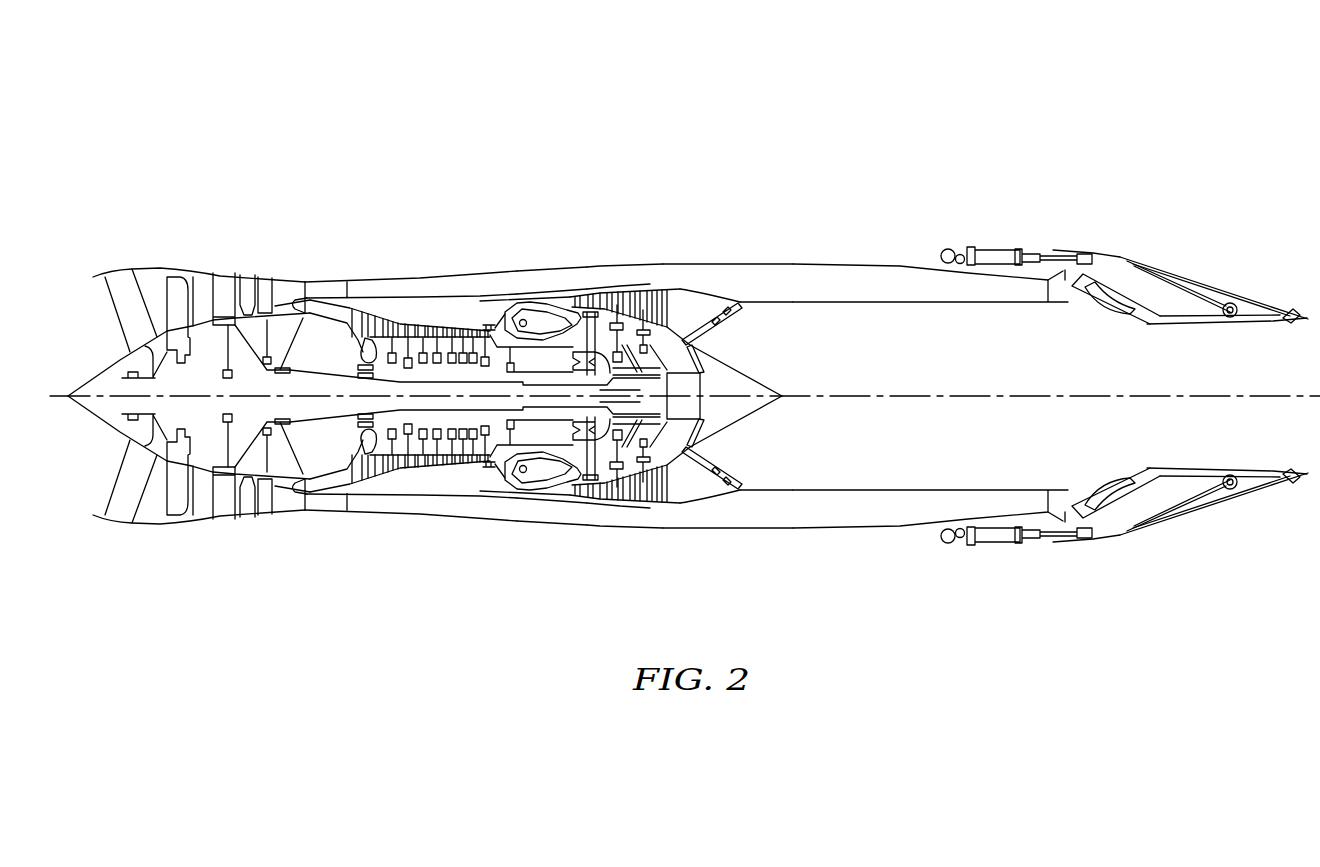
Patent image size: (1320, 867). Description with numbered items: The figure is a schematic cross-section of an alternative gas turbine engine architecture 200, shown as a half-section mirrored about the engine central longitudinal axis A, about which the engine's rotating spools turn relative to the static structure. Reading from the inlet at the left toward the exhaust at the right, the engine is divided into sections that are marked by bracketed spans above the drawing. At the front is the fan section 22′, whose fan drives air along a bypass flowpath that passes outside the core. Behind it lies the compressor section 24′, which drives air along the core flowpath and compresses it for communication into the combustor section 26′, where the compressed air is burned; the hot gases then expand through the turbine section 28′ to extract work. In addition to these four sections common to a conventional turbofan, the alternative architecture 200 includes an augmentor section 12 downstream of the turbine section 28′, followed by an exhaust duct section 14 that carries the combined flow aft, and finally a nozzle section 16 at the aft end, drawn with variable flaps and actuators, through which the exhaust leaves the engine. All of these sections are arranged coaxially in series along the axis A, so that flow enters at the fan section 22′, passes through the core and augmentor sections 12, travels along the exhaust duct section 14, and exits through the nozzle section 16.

The alternative engine architecture 200 is at (985, 101).
The fan section 22′ is at (93, 203).
The compressor section 24′ is at (303, 203).
The combustor section 26′ is at (517, 203).
The turbine section 28′ is at (587, 203).
The augmentor section 12 is at (663, 203).
The exhaust duct section 14 is at (1062, 203).
The nozzle section 16 is at (1307, 203).
The engine central longitudinal axis A is at (899, 399).